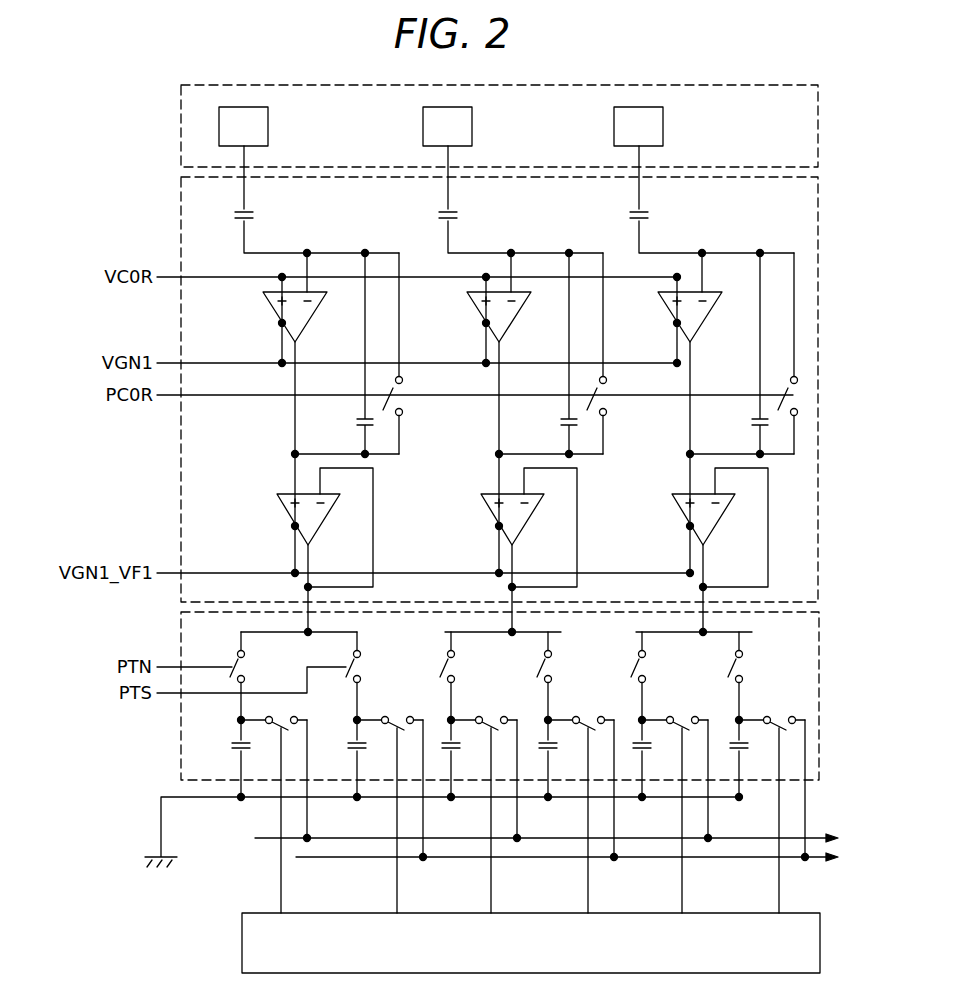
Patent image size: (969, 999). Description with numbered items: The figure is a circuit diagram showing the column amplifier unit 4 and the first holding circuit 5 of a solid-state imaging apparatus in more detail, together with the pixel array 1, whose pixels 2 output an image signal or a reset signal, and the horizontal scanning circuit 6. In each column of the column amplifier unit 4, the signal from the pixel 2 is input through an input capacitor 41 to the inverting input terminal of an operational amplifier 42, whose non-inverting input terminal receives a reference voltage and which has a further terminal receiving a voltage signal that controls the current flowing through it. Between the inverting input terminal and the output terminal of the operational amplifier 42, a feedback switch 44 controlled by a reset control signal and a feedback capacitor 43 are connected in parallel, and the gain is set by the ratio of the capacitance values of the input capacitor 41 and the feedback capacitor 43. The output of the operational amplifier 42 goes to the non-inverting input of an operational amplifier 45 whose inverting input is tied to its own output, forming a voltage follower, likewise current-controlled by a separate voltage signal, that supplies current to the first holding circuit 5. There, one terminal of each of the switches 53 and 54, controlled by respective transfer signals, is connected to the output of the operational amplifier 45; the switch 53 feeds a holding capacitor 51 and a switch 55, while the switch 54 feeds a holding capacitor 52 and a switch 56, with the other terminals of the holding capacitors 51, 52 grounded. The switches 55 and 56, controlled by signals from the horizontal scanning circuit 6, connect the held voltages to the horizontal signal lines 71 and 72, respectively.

The pixel array 1 is at (181, 121).
The pixel 2 is at (268, 127).
The column amplifier unit 4 is at (181, 216).
The input capacitor 41 is at (255, 214).
The operational amplifier 42 is at (270, 313).
The feedback capacitor 43 is at (355, 421).
The feedback switch 44 is at (404, 411).
The operational amplifier 45 is at (278, 513).
The first holding circuit 5 is at (181, 758).
The holding capacitor 51 is at (232, 745).
The holding capacitor 52 is at (352, 745).
The switch 53 is at (232, 660).
The switch 54 is at (362, 663).
The switch 55 is at (272, 735).
The switch 56 is at (397, 706).
The horizontal scanning circuit 6 is at (242, 942).
The horizontal signal line 71 is at (816, 835).
The horizontal signal line 72 is at (813, 861).